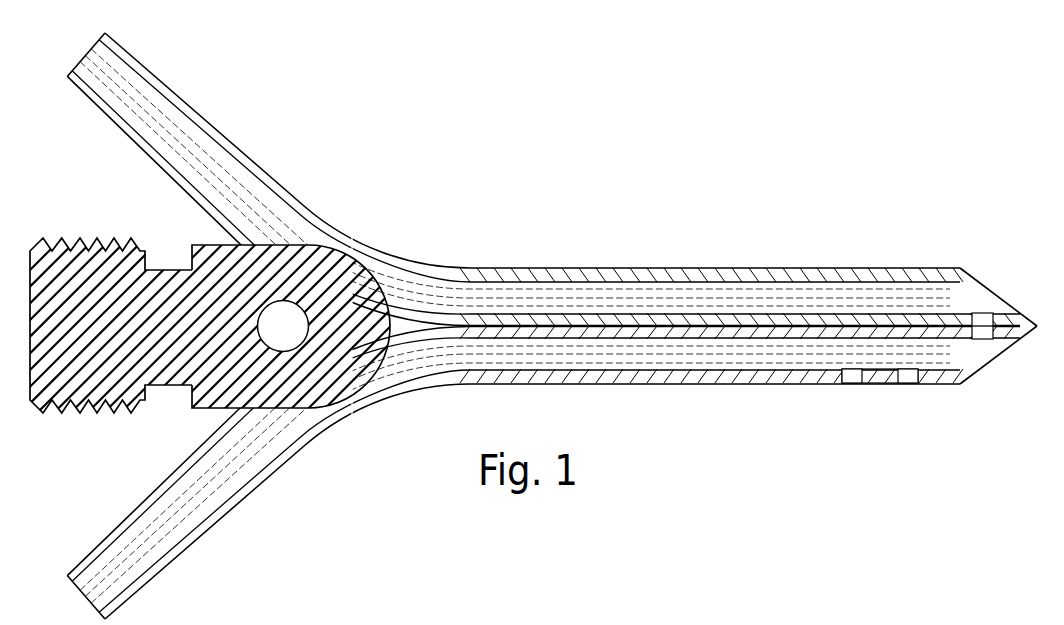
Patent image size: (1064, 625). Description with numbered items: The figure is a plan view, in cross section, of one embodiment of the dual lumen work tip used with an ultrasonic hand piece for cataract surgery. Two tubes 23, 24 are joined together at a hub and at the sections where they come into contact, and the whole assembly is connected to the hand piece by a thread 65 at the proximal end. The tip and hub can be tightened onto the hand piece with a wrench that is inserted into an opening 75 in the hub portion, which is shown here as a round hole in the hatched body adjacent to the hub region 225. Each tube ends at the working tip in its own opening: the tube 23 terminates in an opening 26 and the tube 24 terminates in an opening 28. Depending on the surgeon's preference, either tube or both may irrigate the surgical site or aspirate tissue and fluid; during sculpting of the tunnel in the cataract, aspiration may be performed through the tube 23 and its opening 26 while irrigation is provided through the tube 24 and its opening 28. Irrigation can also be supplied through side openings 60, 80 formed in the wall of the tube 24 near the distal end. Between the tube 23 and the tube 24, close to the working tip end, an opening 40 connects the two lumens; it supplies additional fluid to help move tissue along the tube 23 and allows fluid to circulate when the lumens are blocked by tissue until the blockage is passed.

The thread 65 is at (78, 240).
The mounting body 225 is at (213, 243).
The opening 75 is at (273, 332).
The tube 23 is at (617, 267).
The tube 24 is at (645, 387).
The opening 26 is at (982, 283).
The opening 28 is at (990, 362).
The opening 40 is at (985, 318).
The opening 60 is at (853, 383).
The opening 80 is at (910, 383).